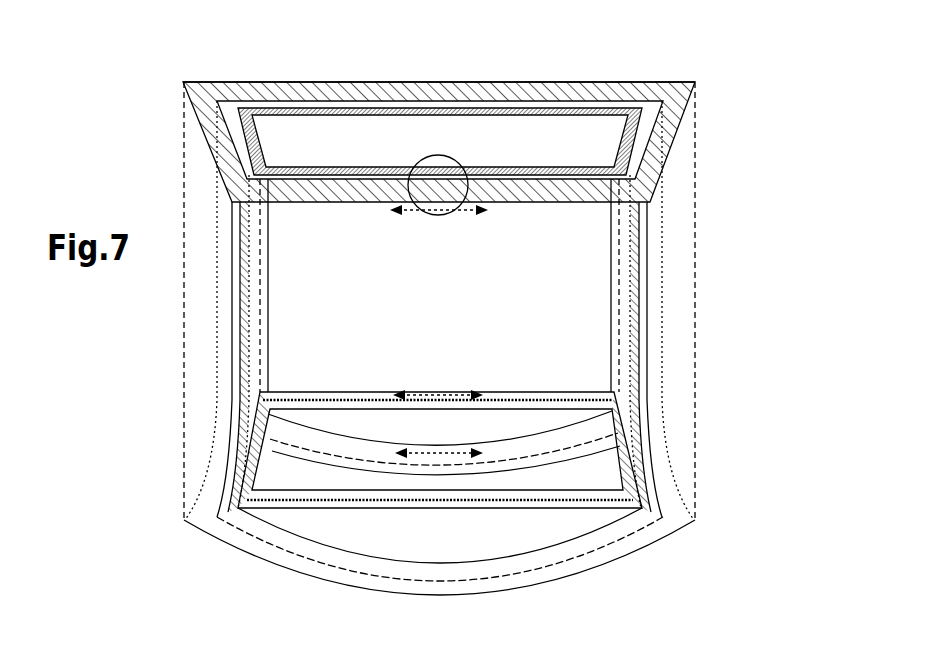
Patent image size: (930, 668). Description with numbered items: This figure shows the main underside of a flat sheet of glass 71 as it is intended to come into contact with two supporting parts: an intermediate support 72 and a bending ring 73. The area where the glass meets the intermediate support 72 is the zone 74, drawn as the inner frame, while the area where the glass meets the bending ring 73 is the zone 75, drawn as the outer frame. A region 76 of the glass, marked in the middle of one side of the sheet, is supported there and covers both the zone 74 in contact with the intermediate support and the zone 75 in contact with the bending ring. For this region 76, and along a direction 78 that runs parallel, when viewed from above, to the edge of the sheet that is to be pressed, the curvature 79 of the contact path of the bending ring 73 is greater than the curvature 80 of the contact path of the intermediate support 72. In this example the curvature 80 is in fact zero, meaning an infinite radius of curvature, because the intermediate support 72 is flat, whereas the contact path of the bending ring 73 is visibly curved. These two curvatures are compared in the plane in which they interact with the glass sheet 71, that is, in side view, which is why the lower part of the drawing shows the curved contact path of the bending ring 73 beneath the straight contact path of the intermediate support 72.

The flat sheet of glass 71 is at (640, 82).
The intermediate support 72 is at (303, 505).
The bending ring 73 is at (467, 567).
The zone of contact with the intermediate support 74 is at (353, 170).
The zone of contact with the bending ring 75 is at (425, 90).
The region of the glass 76 is at (442, 216).
The direction 78 is at (470, 215).
The curvature of the contact path of the bending ring 79 is at (467, 445).
The curvature of the contact path of the intermediate support 80 is at (432, 392).